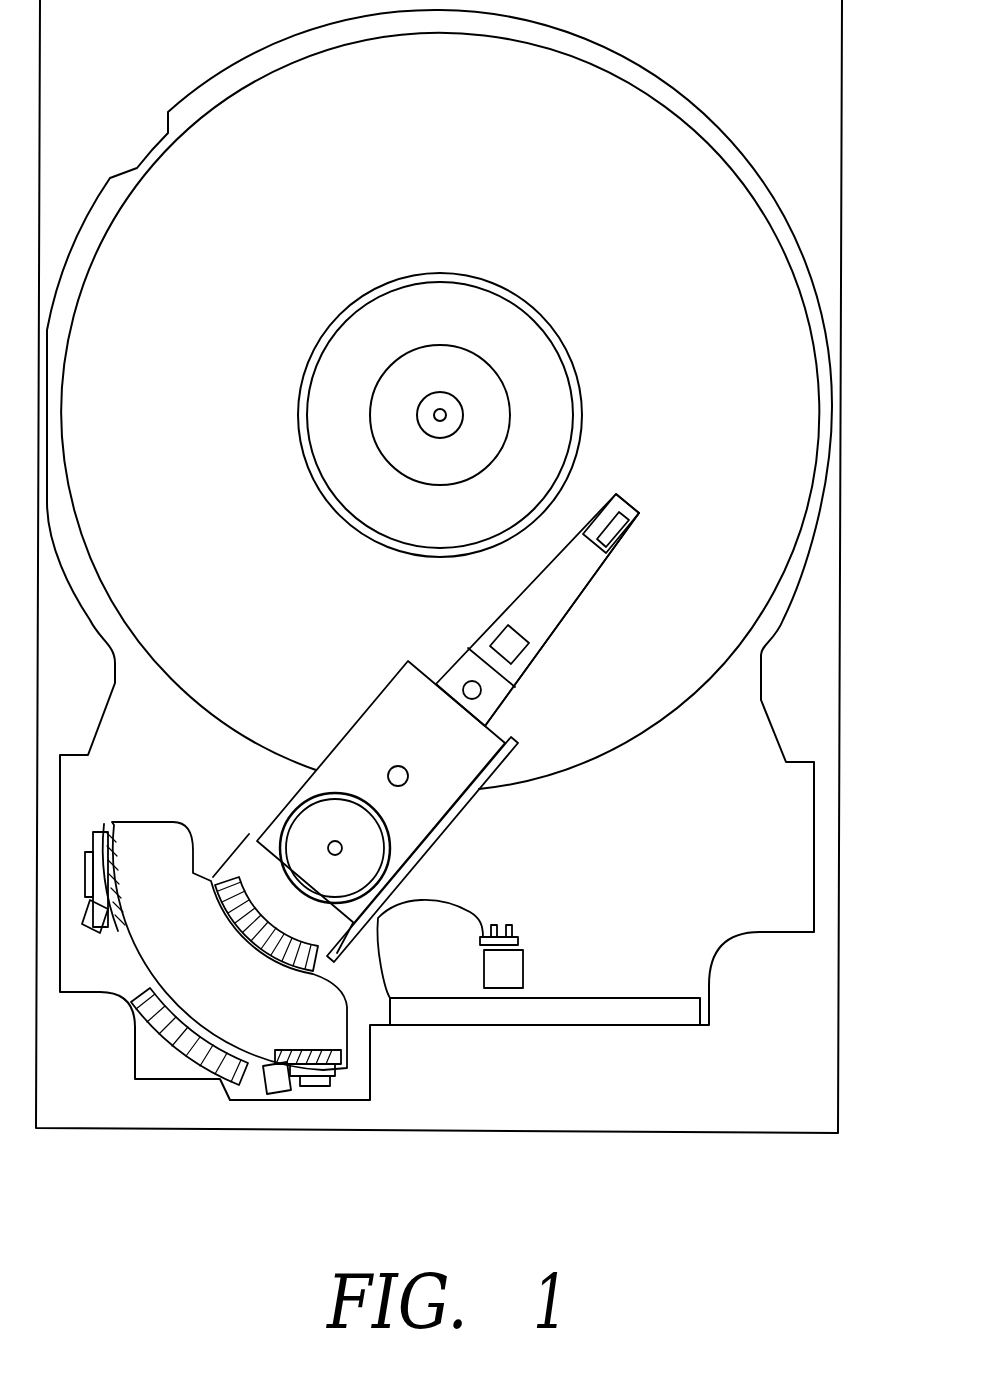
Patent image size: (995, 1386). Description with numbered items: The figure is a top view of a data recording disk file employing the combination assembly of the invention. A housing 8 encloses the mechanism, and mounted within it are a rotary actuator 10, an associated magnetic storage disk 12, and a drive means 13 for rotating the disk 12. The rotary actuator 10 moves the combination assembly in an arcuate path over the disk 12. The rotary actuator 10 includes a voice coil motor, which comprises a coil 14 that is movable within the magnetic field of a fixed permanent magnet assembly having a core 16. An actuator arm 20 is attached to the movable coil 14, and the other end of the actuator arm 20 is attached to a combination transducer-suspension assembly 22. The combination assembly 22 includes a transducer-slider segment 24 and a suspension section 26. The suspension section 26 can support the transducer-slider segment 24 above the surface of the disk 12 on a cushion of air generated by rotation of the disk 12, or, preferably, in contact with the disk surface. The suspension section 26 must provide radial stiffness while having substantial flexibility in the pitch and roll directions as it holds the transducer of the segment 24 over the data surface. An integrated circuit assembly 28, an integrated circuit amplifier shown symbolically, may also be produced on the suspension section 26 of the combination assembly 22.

The housing 8 is at (824, 868).
The rotary actuator 10 is at (404, 837).
The magnetic storage disk 12 is at (784, 322).
The drive means 13 is at (372, 505).
The coil 14 is at (195, 1066).
The core 16 is at (193, 1007).
The actuator arm 20 is at (447, 803).
The combination transducer-suspension assembly 22 is at (612, 596).
The transducer-slider segment 24 is at (632, 523).
The suspension section 26 is at (547, 635).
The integrated circuit assembly 28 is at (515, 650).